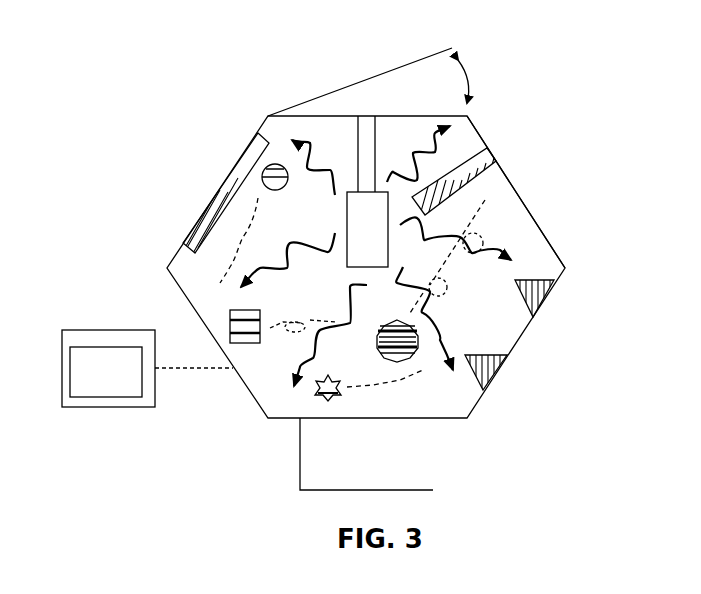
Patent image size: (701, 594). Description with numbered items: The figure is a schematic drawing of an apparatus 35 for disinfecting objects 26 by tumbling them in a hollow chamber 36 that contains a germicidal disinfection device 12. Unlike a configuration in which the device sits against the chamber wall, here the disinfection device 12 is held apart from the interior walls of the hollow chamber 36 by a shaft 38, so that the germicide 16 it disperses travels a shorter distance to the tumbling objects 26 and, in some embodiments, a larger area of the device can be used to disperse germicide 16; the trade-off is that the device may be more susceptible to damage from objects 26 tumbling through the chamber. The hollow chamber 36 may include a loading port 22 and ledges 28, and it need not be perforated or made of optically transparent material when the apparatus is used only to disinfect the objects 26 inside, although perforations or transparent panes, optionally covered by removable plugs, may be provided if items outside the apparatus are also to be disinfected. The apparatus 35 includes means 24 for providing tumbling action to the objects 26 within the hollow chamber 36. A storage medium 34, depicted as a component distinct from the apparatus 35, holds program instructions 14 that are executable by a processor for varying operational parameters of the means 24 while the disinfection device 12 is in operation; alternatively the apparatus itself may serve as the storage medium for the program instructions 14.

The disinfection device 12 is at (367, 229).
The program instructions 14 is at (106, 372).
The germicide 16 is at (307, 154).
The loading port 22 is at (436, 116).
The means for providing tumbling action 24 is at (418, 452).
The objects 26 is at (277, 182).
The ledges 28 is at (223, 186).
The storage medium 34 is at (126, 330).
The apparatus 35 is at (349, 50).
The hollow chamber 36 is at (532, 213).
The shaft 38 is at (367, 152).